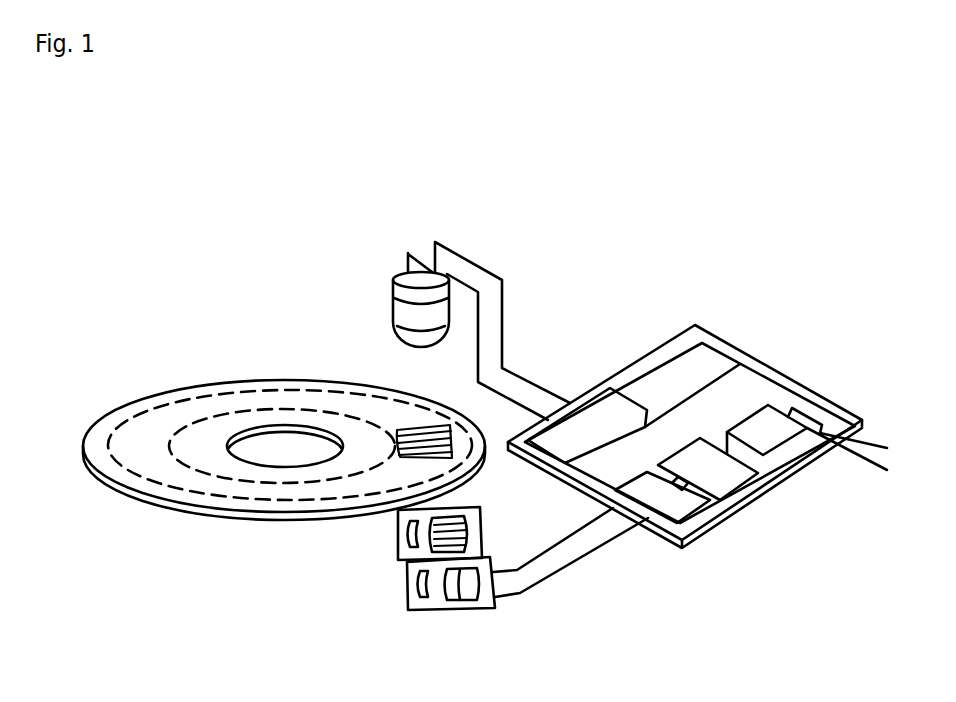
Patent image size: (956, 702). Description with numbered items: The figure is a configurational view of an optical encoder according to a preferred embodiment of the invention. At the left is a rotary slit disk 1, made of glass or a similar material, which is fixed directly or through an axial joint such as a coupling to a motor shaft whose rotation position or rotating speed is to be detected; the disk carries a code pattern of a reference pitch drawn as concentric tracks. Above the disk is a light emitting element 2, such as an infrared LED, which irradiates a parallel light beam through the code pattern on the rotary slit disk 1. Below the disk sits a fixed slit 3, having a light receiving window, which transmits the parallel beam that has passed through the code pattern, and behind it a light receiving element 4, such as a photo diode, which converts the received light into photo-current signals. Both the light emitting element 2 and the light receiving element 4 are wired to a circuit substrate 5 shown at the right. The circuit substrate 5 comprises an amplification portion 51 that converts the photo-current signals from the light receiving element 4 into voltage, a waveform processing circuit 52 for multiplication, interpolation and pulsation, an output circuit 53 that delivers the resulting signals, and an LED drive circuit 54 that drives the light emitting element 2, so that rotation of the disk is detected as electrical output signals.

The rotary slit disk 1 is at (173, 420).
The light emitting element 2 is at (407, 313).
The fixed slit 3 is at (398, 533).
The light receiving element 4 is at (423, 603).
The circuit substrate 5 is at (655, 360).
The amplification portion 51 is at (680, 510).
The waveform processing circuit 52 is at (733, 478).
The output circuit 53 is at (755, 430).
The LED drive circuit 54 is at (597, 425).